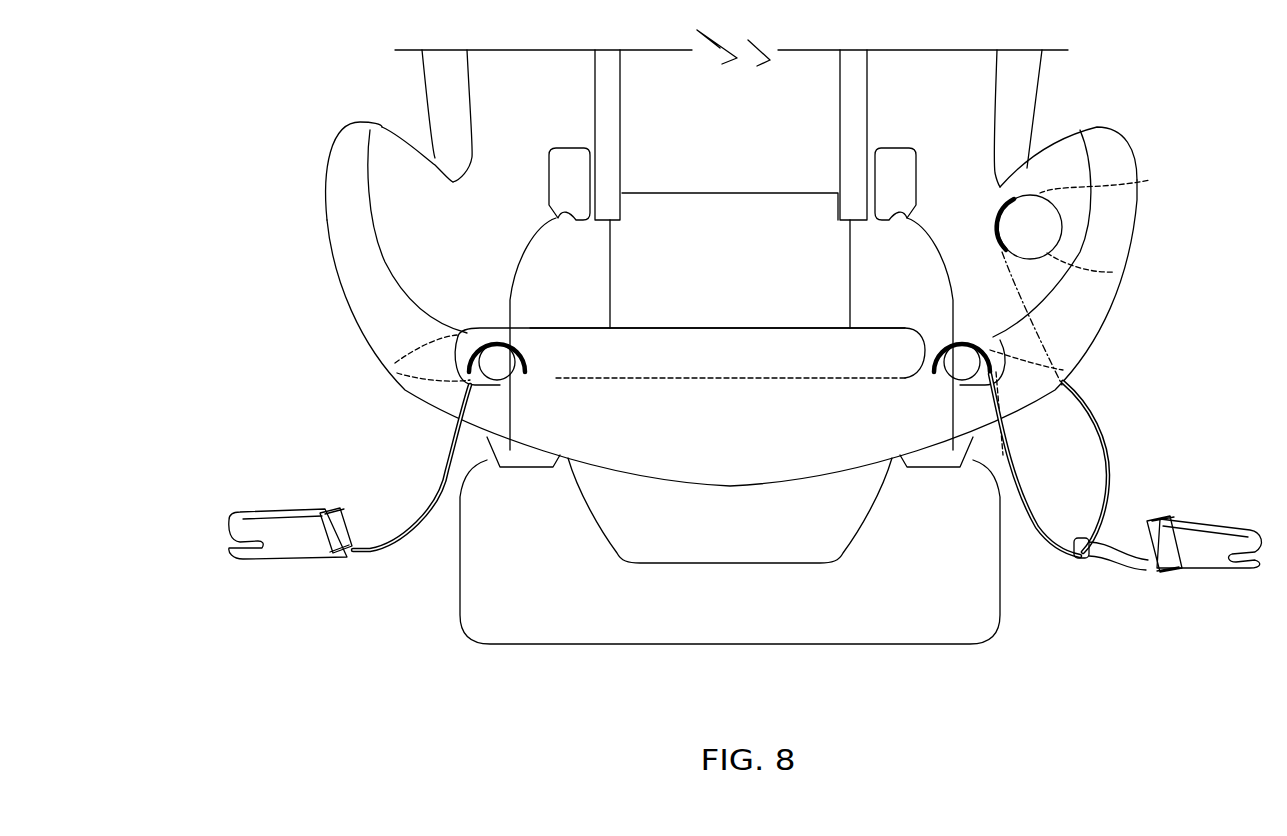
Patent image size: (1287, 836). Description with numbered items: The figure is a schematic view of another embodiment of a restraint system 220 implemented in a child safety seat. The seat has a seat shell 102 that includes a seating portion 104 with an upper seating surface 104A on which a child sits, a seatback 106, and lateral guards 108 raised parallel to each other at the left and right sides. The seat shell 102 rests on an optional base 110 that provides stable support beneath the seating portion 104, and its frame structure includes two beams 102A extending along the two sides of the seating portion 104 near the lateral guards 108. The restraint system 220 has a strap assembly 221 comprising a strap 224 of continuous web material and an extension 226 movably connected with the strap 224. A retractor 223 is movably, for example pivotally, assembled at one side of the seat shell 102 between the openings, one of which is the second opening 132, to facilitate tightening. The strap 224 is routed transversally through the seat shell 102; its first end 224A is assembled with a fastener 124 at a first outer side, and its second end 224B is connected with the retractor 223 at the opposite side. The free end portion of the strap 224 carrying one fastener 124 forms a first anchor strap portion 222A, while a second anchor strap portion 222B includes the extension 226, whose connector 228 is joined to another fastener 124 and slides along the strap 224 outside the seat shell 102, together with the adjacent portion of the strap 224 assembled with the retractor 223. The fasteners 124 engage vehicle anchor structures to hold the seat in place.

The seat shell 102 is at (1113, 222).
The beams 102A is at (400, 364).
The seating portion 104 is at (691, 380).
The upper seating surface 104A is at (755, 325).
The seatback 106 is at (731, 125).
The lateral guards 108 is at (352, 140).
The base 110 is at (730, 540).
The fastener 124 is at (292, 546).
The second opening 132 is at (568, 178).
The restraint system 220 is at (205, 508).
The strap assembly 221 is at (608, 365).
The first anchor strap portion 222A is at (427, 467).
The second anchor strap portion 222B is at (1112, 453).
The retractor 223 is at (1113, 272).
The strap 224 is at (705, 375).
The first end 224A is at (384, 553).
The second end 224B is at (1150, 180).
The extension 226 is at (1115, 577).
The connector 228 is at (1080, 562).